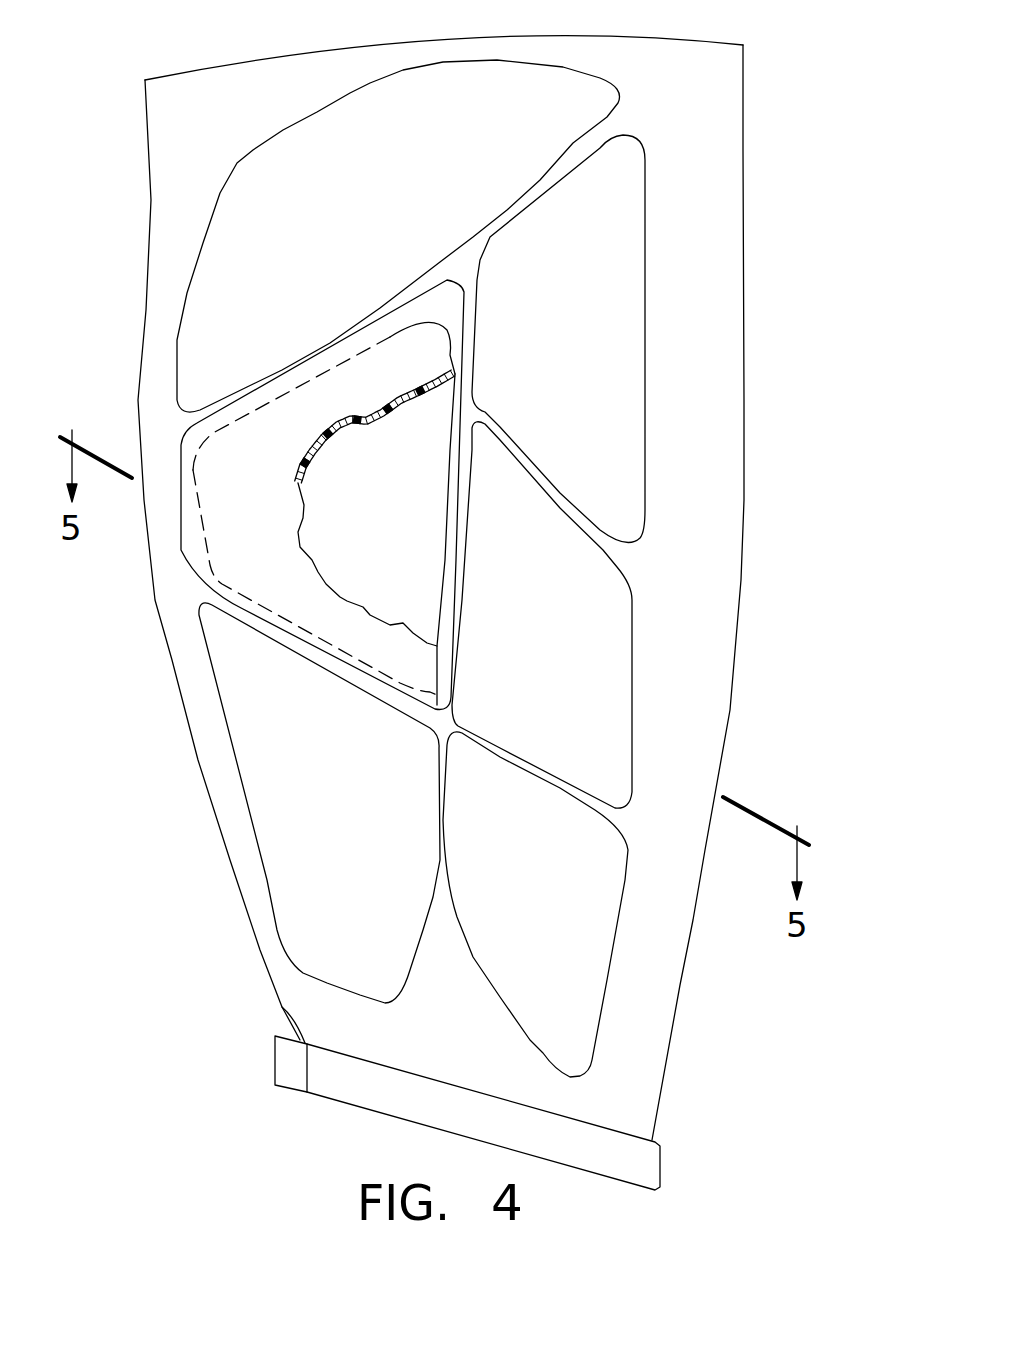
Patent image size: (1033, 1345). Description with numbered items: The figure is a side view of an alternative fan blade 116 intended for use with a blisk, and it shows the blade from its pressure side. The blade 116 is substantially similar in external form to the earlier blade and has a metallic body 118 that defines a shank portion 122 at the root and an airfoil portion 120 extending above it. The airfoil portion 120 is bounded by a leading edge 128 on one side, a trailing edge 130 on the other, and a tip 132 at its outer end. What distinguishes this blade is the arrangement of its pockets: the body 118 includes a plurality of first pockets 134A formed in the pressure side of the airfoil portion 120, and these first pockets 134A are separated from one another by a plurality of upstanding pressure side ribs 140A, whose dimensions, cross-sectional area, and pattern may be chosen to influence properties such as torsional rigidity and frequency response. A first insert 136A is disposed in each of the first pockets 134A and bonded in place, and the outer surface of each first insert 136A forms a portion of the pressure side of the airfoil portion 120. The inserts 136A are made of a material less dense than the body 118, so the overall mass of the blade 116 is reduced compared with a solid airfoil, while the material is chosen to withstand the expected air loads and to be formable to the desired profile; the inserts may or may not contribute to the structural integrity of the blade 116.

The blade 116 is at (793, 172).
The metallic body 118 is at (417, 533).
The airfoil portion 120 is at (127, 653).
The shank portion 122 is at (208, 1110).
The leading edge 128 is at (746, 503).
The trailing edge 130 is at (138, 352).
The tip 132 is at (343, 47).
The first pockets 134A is at (182, 515).
The first inserts 136A is at (237, 247).
The pressure side ribs 140A is at (480, 277).